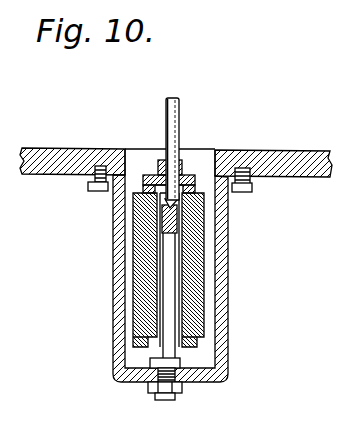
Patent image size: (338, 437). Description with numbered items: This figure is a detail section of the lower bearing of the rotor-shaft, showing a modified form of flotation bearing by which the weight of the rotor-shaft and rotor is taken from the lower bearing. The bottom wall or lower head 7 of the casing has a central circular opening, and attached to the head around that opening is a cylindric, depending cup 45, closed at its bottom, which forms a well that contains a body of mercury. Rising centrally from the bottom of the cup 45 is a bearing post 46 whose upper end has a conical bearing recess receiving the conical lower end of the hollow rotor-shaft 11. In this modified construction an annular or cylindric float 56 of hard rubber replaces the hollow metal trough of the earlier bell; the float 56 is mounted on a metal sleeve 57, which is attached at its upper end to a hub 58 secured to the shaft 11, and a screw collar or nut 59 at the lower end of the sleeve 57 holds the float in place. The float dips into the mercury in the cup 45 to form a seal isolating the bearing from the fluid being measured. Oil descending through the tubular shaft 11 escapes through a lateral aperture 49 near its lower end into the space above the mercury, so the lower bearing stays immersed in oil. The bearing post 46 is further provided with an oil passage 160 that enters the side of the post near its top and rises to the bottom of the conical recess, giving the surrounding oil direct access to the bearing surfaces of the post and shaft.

The lower head 7 is at (62, 167).
The rotor-shaft 11 is at (178, 107).
The cup 45 is at (122, 258).
The bearing post 46 is at (167, 323).
The lateral aperture 49 is at (170, 194).
The cylindric float 56 is at (192, 267).
The metal sleeve 57 is at (185, 290).
The hub 58 is at (183, 173).
The screw collar 59 is at (190, 349).
The oil passage 160 is at (168, 220).